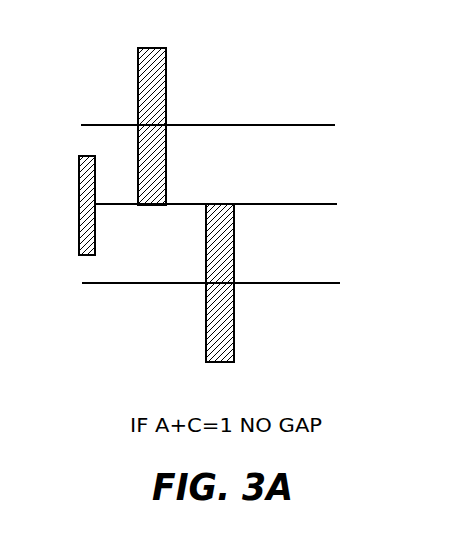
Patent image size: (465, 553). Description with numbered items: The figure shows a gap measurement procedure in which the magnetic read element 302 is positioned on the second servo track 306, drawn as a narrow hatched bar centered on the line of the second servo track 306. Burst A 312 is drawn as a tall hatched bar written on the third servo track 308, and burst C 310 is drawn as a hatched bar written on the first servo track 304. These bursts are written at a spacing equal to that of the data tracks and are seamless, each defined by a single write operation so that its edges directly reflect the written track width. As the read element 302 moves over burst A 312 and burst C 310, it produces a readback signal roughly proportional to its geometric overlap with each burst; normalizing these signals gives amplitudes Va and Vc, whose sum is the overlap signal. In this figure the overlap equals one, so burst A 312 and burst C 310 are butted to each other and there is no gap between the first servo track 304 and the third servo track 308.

The magnetic read element 302 is at (87, 263).
The servo track 1 304 is at (255, 283).
The servo track 2 306 is at (261, 205).
The servo track 3 308 is at (254, 126).
The burst C 310 is at (223, 298).
The burst A 312 is at (152, 112).